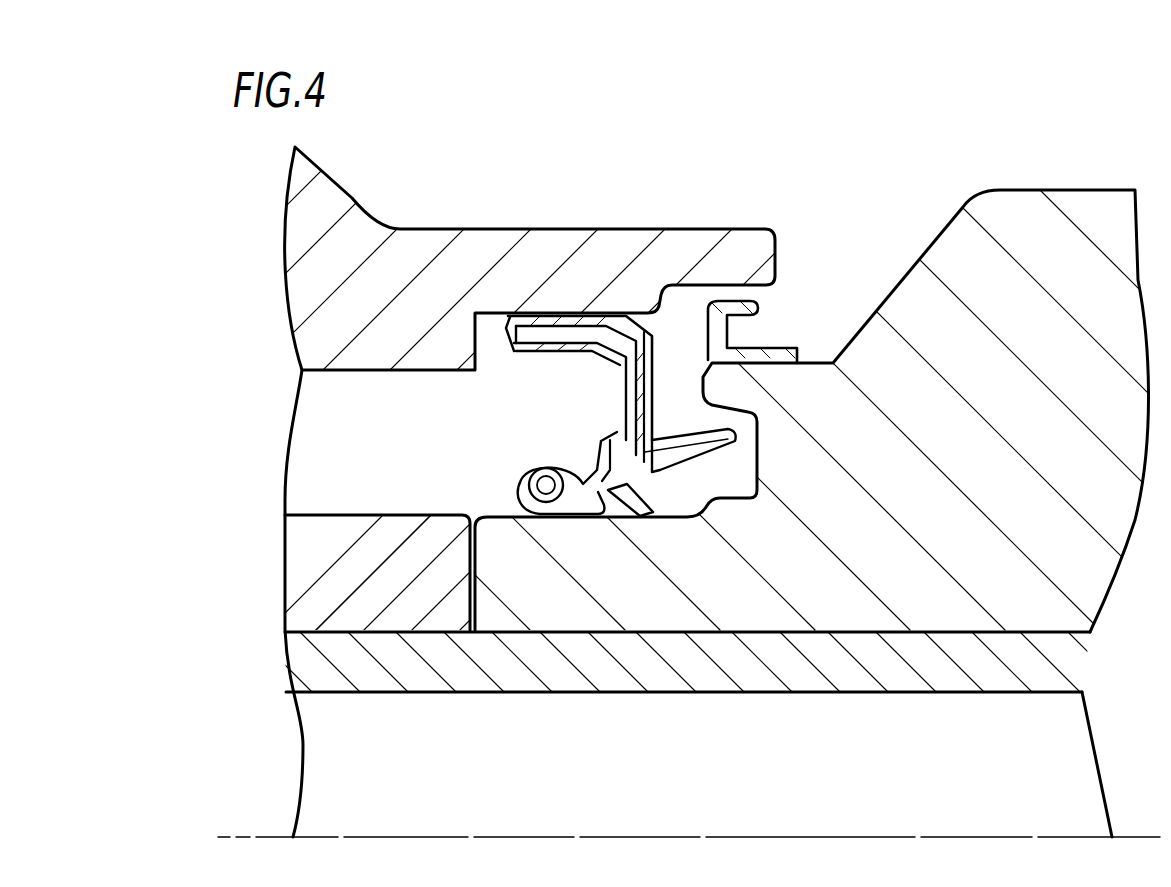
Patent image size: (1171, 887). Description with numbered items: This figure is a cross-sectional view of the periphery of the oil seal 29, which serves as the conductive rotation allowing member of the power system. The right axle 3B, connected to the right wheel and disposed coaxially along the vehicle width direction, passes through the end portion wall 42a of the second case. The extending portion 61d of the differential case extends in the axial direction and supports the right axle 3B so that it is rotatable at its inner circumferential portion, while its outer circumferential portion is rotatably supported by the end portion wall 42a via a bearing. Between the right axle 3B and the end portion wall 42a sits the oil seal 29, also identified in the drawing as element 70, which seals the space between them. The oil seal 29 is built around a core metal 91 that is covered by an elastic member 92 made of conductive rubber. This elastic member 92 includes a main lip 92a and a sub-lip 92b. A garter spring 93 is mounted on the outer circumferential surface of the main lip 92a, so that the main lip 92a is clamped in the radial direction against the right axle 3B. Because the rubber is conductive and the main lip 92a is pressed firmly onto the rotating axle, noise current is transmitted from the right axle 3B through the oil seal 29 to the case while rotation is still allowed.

The right axle 3B is at (1065, 187).
The end portion wall 42a is at (588, 247).
The core metal 91 is at (550, 333).
The oil seal 29 is at (662, 333).
The seal member 70 is at (650, 462).
The elastic member 92 is at (718, 455).
The main lip 92a is at (553, 500).
The sub-lip 92b is at (627, 503).
The garter spring 93 is at (545, 460).
The extending portion 61d is at (368, 553).